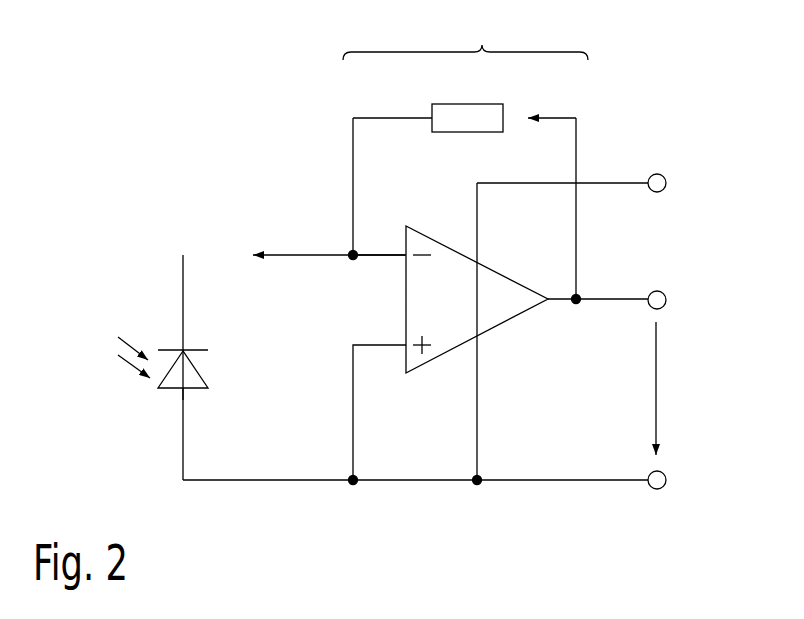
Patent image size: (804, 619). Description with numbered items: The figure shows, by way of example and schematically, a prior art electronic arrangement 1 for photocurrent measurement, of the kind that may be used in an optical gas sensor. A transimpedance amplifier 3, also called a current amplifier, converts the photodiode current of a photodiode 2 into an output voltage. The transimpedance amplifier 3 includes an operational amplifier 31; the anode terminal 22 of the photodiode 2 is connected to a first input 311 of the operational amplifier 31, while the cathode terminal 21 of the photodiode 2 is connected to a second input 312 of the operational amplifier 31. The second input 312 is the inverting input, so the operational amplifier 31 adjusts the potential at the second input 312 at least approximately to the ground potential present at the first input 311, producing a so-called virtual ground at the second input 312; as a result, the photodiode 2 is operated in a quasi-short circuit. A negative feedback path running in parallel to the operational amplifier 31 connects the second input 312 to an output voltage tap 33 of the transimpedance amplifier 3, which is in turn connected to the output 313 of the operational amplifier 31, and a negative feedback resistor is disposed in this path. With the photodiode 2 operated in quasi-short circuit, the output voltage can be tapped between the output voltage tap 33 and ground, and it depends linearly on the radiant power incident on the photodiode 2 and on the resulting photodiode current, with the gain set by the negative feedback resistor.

The electronic arrangement 1 is at (635, 113).
The photodiode 2 is at (158, 386).
The cathode terminal 21 is at (173, 337).
The anode terminal 22 is at (173, 408).
The transimpedance amplifier 3 is at (484, 249).
The operational amplifier 31 is at (490, 312).
The first input 311 is at (398, 337).
The second input 312 is at (398, 263).
The output 313 is at (553, 308).
The output voltage tap 33 is at (655, 288).